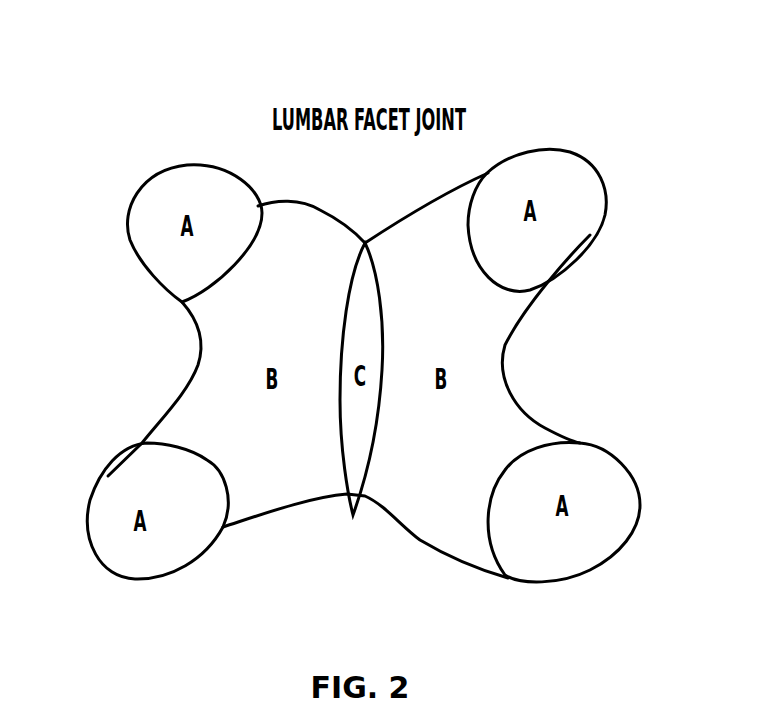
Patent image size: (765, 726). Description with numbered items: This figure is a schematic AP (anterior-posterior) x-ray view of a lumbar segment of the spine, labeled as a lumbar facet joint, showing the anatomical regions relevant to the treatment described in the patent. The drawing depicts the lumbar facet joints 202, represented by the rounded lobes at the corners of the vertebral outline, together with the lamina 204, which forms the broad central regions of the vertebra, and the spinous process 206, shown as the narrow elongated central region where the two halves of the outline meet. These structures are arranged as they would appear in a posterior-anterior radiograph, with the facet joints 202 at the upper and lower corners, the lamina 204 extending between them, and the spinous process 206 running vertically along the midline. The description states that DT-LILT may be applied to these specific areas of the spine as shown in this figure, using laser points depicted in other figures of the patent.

The lumbar facet joints 202 is at (140, 183).
The lamina 204 is at (190, 378).
The spinous process 206 is at (378, 277).